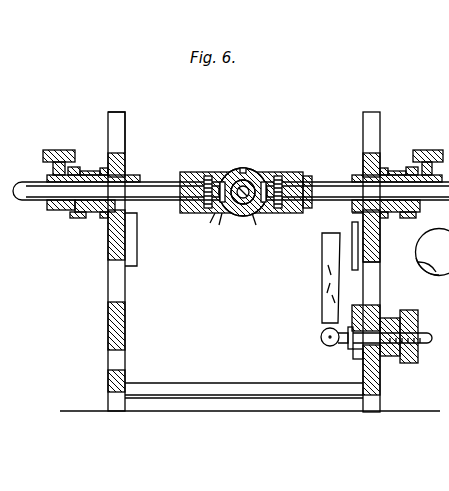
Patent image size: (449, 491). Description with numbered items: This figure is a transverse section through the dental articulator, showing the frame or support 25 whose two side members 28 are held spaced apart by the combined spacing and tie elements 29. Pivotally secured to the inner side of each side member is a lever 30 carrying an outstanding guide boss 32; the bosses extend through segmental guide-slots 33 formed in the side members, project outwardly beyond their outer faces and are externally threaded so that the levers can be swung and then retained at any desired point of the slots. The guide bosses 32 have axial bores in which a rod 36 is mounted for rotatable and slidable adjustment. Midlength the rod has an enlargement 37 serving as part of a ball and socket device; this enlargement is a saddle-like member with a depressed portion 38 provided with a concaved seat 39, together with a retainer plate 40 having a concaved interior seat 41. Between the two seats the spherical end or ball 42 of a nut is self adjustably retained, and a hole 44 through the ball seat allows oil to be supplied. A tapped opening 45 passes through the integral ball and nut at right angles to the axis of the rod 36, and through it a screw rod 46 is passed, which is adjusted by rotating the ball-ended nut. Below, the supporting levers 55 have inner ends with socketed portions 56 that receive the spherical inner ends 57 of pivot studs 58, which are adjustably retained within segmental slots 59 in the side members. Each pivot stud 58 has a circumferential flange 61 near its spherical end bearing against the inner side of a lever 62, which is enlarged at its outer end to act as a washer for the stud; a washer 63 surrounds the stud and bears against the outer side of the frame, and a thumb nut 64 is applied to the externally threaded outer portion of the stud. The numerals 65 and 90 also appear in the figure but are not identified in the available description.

The frame or support 25 is at (108, 326).
The side members 28 is at (127, 142).
The combined spacing and tie elements 29 is at (236, 392).
The lever 30 is at (138, 226).
The guide boss 32 is at (96, 212).
The segmental guide-slots 33 is at (131, 175).
The rod 36 is at (63, 205).
The enlargement 37 is at (301, 214).
The depressed portion 38 is at (276, 177).
The concaved seat 39 is at (238, 170).
The retainer plate 40 is at (232, 244).
The concaved interior portion or seat 41 is at (272, 244).
The spherical end or ball 42 is at (254, 174).
The hole 44 is at (243, 168).
The tapped opening 45 is at (243, 216).
The screw rod 46 is at (221, 175).
The supporting levers 55 is at (322, 284).
The socketed portions 56 is at (334, 348).
The spherical inner ends 57 is at (320, 338).
The pivot studs 58 is at (355, 246).
The segmental slots 59 is at (378, 316).
The circumferential flange 61 is at (355, 358).
The lever 62 is at (380, 272).
The washer 63 is at (382, 365).
The thumb nut 64 is at (419, 320).
The bolt 65 is at (428, 344).
The hub lower part 90 is at (214, 214).